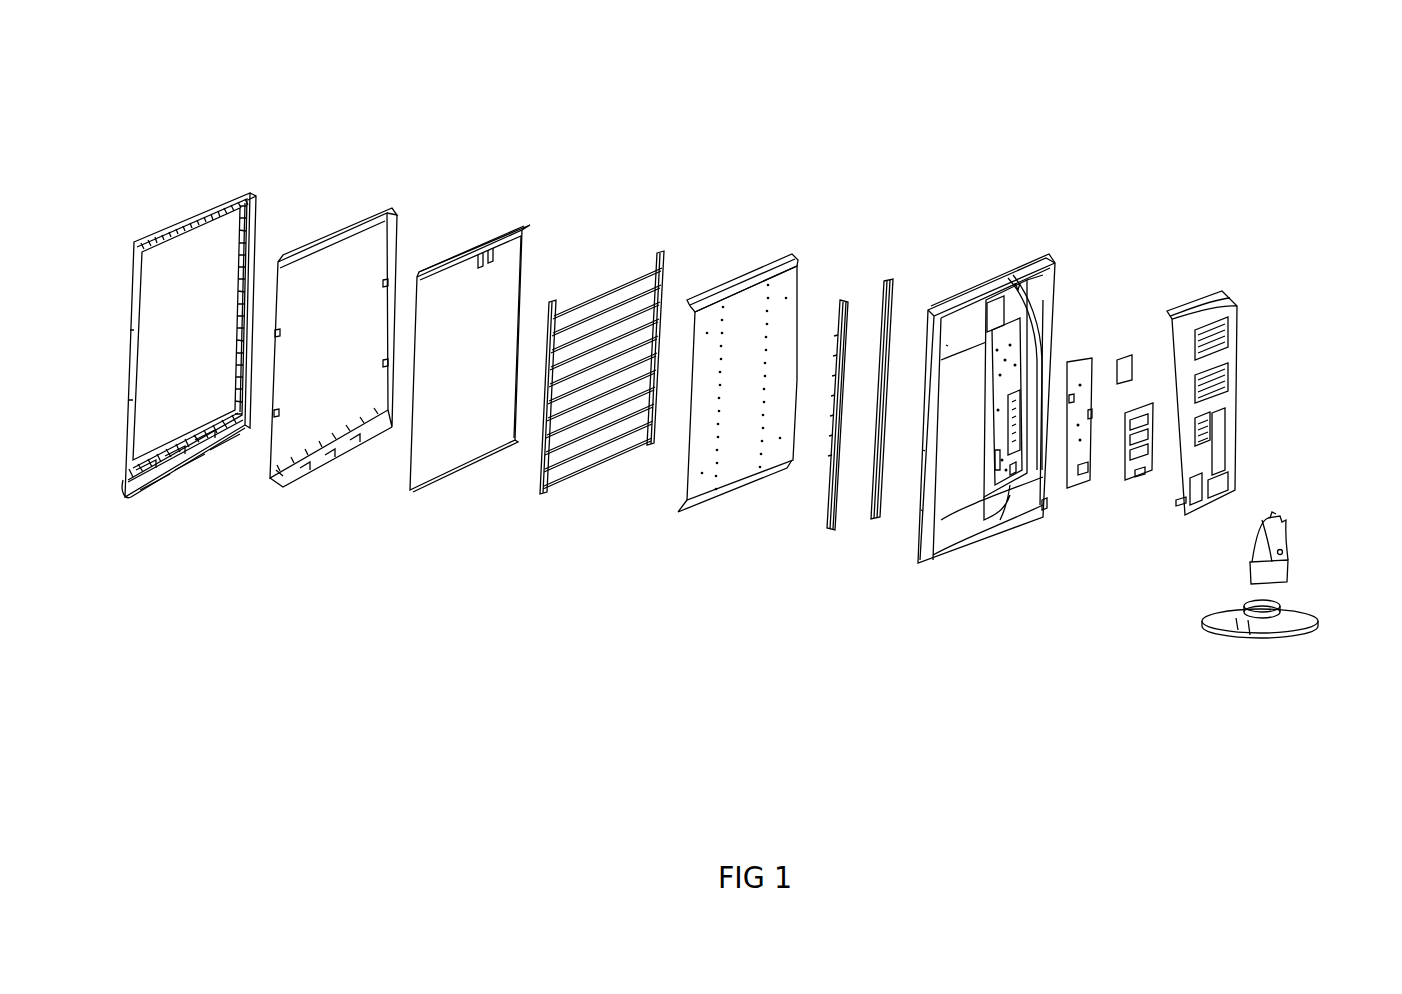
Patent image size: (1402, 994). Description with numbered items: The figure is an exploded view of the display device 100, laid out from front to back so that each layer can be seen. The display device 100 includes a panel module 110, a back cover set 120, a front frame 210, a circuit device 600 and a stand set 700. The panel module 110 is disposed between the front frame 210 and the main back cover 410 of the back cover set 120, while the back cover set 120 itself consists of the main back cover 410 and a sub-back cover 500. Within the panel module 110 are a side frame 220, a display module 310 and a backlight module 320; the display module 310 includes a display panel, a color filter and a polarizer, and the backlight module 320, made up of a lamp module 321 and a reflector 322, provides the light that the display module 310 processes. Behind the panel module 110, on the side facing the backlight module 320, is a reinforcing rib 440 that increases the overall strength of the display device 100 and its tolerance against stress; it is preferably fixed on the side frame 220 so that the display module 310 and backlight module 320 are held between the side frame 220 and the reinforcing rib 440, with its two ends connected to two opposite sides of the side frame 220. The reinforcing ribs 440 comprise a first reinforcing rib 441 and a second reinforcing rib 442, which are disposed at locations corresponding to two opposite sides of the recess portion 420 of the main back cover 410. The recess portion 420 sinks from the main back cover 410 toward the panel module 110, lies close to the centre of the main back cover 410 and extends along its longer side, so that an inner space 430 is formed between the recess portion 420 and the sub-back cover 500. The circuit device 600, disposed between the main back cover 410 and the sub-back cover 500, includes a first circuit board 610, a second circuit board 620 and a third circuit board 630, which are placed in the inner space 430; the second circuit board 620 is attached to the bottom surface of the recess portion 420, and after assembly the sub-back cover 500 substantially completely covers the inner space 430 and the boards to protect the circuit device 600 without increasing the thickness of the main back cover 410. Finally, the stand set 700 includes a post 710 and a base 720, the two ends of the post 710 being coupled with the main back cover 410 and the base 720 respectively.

The display device 100 is at (1160, 103).
The panel module 110 is at (325, 117).
The back cover set 120 is at (1262, 192).
The front frame 210 is at (200, 243).
The side frame 220 is at (365, 213).
The display module 310 is at (460, 268).
The backlight module 320 is at (643, 157).
The lamp module 321 is at (605, 266).
The reflector 322 is at (756, 262).
The main back cover 410 is at (1060, 292).
The recess portion 420 is at (1028, 474).
The inner space 430 is at (1033, 310).
The reinforcing rib 440 is at (818, 209).
The first reinforcing rib 441 is at (888, 283).
The second reinforcing rib 442 is at (840, 303).
The sub-back cover 500 is at (1244, 316).
The circuit device 600 is at (1157, 565).
The first circuit board 610 is at (1142, 494).
The second circuit board 620 is at (1066, 494).
The third circuit board 630 is at (1115, 396).
The stand set 700 is at (1270, 442).
The post 710 is at (1287, 540).
The base 720 is at (1300, 612).